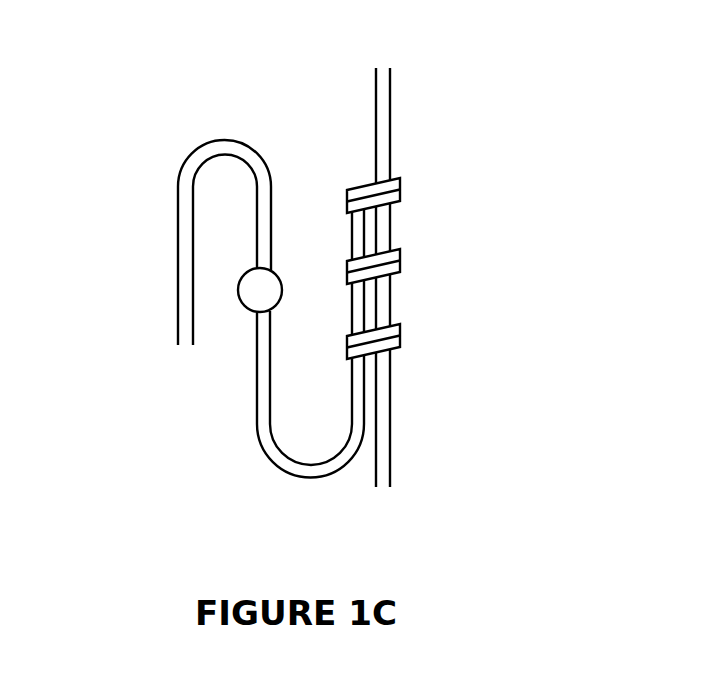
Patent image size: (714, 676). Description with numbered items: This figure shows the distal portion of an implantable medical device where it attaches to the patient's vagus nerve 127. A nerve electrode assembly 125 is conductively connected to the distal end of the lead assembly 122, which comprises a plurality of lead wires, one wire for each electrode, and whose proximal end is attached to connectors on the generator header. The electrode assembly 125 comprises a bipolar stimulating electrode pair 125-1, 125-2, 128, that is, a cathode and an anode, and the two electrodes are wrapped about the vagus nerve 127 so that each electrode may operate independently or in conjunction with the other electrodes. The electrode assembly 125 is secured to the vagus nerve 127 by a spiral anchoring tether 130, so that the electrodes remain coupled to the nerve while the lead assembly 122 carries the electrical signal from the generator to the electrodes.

The lead assembly 122 is at (257, 428).
The nerve electrode assembly 125 is at (471, 225).
The first stimulating electrode 125-1 is at (400, 196).
The second stimulating electrode 125-2 is at (400, 268).
The vagus nerve 127 is at (376, 102).
The electrode 128 is at (400, 341).
The spiral anchoring tether 130 is at (240, 282).